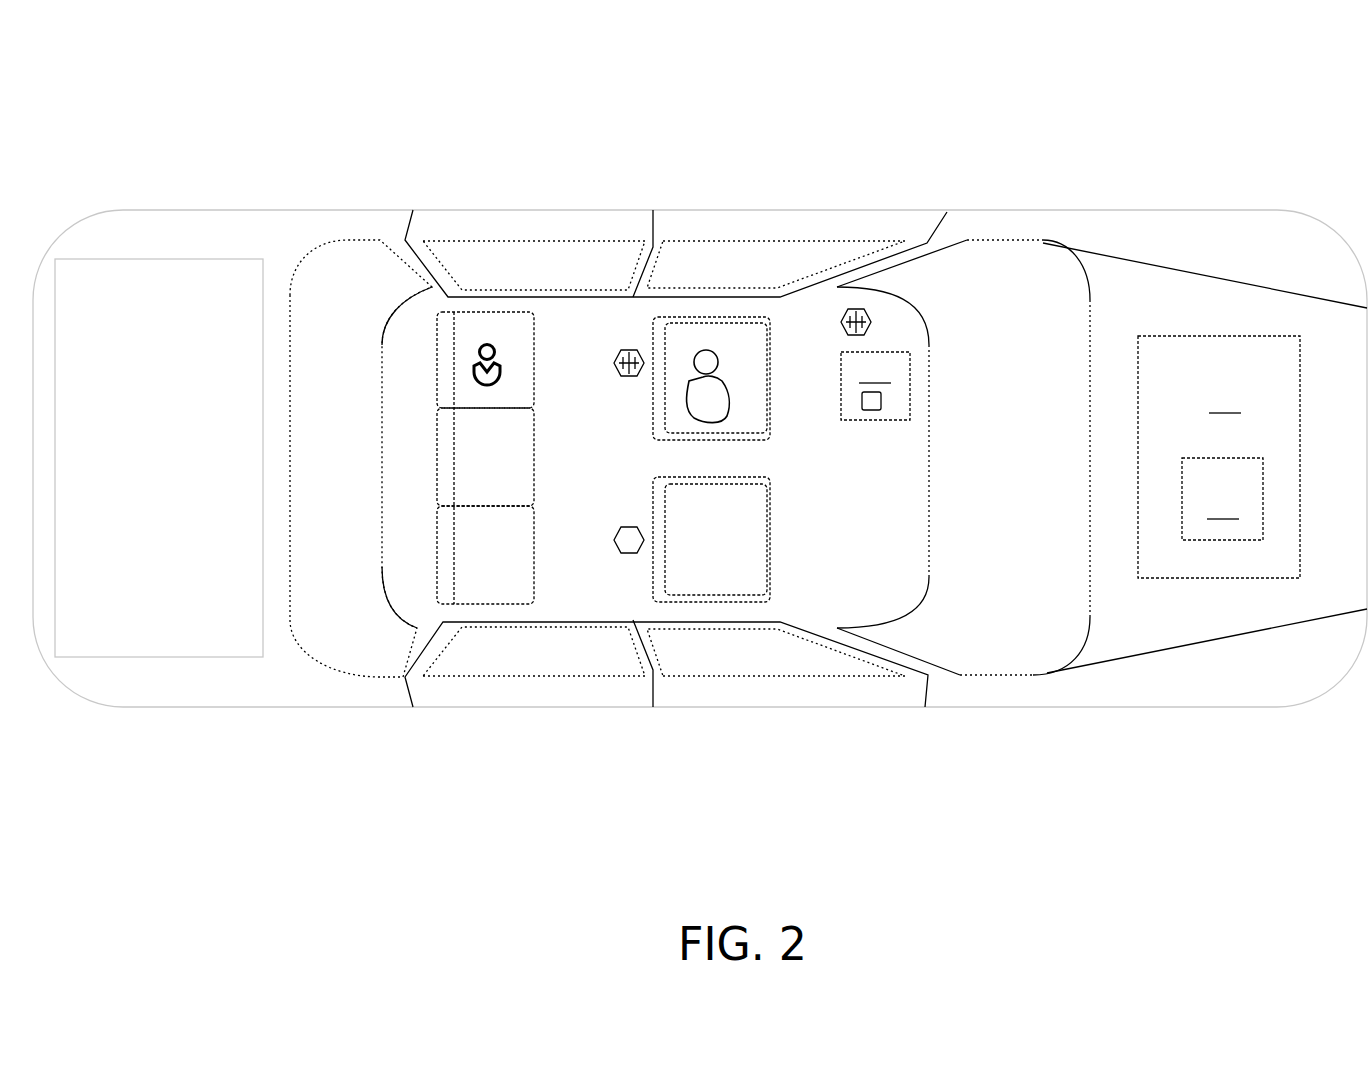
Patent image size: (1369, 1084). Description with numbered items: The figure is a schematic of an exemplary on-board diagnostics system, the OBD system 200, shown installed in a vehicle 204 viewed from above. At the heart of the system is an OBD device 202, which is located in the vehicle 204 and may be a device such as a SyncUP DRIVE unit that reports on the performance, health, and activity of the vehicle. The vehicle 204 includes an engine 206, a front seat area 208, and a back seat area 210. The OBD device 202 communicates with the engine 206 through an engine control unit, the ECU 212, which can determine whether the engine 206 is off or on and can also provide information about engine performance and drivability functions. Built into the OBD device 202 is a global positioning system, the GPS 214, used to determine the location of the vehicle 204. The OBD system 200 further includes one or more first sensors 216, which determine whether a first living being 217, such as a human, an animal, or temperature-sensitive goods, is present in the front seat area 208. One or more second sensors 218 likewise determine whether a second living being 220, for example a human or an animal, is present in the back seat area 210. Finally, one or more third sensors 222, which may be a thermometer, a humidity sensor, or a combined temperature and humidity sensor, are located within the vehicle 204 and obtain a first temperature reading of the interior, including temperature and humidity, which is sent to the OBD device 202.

The on-board diagnostics (OBD) system 200 is at (1033, 102).
The OBD device 202 is at (875, 386).
The vehicle 204 is at (355, 195).
The engine 206 is at (1219, 457).
The front seat area 208 is at (724, 310).
The back seat area 210 is at (487, 610).
The engine control unit (ECU) 212 is at (1222, 499).
The global positioning system (GPS) 214 is at (869, 412).
The first sensors 216 is at (872, 308).
The first living being 217 is at (708, 342).
The second sensors 218 is at (629, 379).
The second living being 220 is at (487, 332).
The third sensors 222 is at (630, 554).